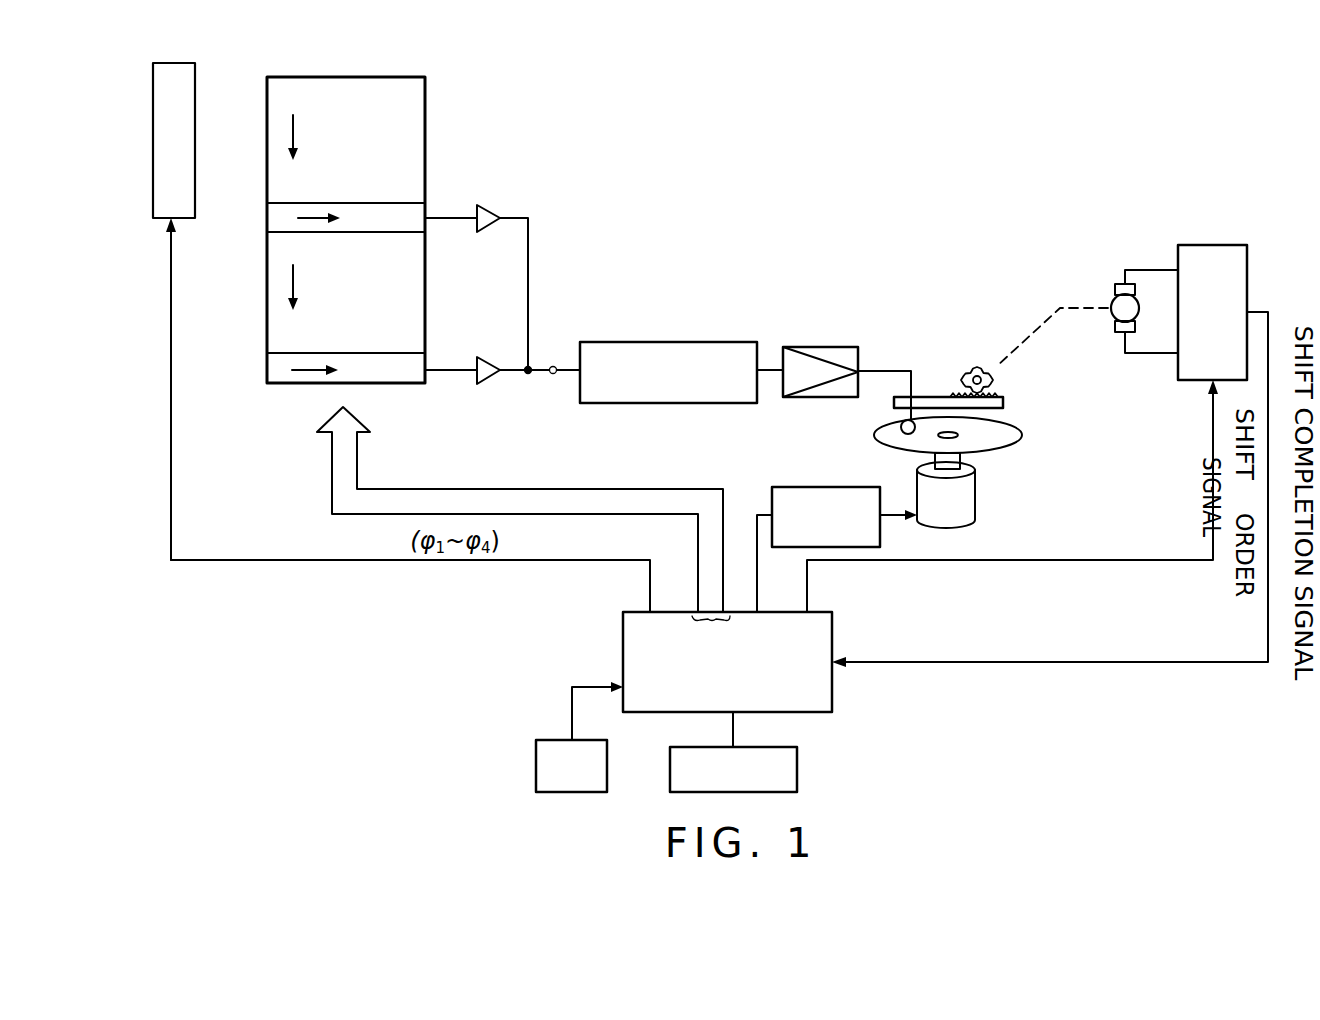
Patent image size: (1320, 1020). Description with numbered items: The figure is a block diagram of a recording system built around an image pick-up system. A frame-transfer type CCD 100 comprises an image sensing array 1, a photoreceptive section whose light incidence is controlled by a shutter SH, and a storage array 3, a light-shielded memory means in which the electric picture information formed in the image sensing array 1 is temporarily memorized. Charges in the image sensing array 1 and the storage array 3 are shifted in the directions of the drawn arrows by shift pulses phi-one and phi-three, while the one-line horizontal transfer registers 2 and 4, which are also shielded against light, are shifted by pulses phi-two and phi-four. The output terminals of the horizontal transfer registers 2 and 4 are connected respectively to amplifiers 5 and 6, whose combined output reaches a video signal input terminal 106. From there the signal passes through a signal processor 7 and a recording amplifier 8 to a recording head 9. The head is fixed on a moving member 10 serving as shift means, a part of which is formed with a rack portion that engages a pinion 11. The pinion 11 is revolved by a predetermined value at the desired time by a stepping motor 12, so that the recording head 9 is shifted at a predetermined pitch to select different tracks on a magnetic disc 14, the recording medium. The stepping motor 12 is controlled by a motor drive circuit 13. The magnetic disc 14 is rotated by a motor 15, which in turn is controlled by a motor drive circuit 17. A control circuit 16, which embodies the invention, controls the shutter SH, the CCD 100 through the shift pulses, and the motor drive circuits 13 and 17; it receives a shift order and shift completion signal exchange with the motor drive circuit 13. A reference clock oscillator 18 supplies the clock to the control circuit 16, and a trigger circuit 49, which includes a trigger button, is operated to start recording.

The image sensing array 1 is at (425, 88).
The horizontal transfer register 2 is at (425, 212).
The storage array 3 is at (418, 292).
The horizontal transfer register 4 is at (418, 362).
The amplifier 5 is at (488, 206).
The amplifier 6 is at (488, 356).
The signal processor 7 is at (713, 342).
The recording amplifier 8 is at (819, 346).
The recording head 9 is at (900, 428).
The moving member 10 is at (928, 397).
The pinion 11 is at (993, 376).
The stepping motor 12 is at (1110, 298).
The motor drive circuit 13 is at (1212, 245).
The magnetic disc 14 is at (1022, 430).
The motor 15 is at (975, 500).
The control circuit 16 is at (832, 697).
The motor drive circuit 17 is at (790, 487).
The reference clock oscillator 18 is at (536, 780).
The trigger circuit 49 is at (797, 778).
The CCD 100 is at (512, 112).
The video signal input terminal 106 is at (553, 366).
The shutter SH is at (195, 92).